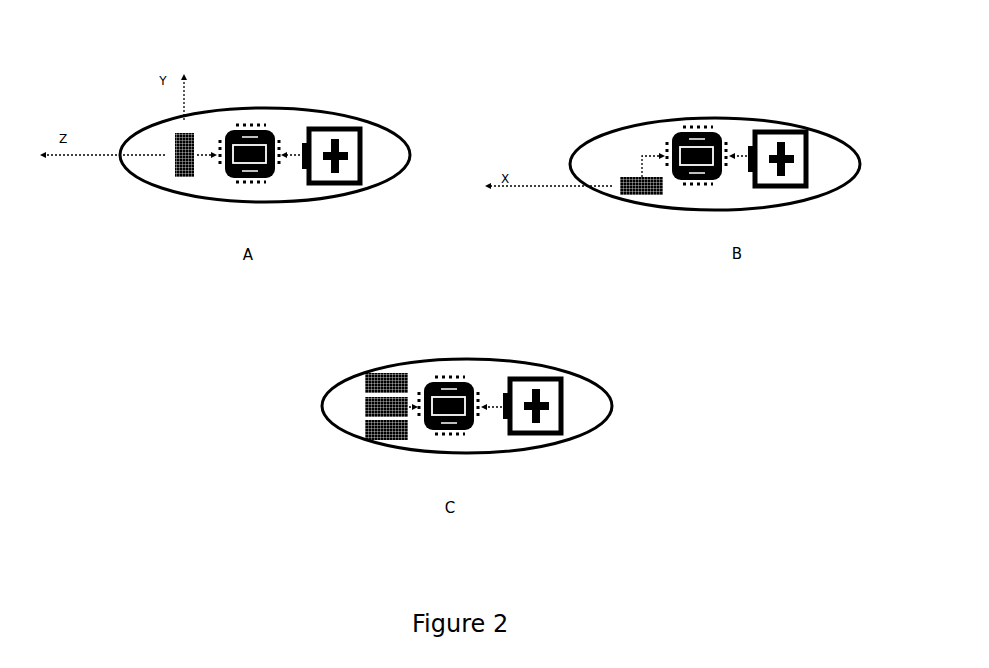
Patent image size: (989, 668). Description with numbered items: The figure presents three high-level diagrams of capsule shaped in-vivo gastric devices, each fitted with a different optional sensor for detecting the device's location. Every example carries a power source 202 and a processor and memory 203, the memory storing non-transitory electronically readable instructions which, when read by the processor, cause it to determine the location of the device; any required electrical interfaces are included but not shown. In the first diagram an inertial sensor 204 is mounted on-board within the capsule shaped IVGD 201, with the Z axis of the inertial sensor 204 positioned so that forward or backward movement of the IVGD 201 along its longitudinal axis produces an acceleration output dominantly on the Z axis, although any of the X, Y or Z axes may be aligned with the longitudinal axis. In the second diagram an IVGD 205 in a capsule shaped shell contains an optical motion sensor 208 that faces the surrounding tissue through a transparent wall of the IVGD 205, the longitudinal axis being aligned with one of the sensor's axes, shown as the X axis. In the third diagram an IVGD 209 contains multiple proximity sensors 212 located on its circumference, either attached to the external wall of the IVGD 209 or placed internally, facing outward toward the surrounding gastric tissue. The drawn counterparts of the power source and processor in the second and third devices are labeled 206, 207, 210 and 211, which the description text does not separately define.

In FIG. 2A, the capsule shaped IVGD 201 is at (404, 136).
In FIG. 2A, the power source 202 is at (364, 128).
In FIG. 2A, the processor and memory 203 is at (266, 127).
In FIG. 2A, the inertial sensor 204 is at (196, 135).
In FIG. 2B, the IVGD 205 is at (852, 143).
In FIG. 2B, the battery 206 is at (810, 136).
In FIG. 2B, the processor 207 is at (721, 136).
In FIG. 2B, the optical motion sensor 208 is at (633, 197).
In FIG. 2C, the IVGD 209 is at (606, 387).
In FIG. 2C, the battery 210 is at (568, 372).
In FIG. 2C, the processor 211 is at (468, 379).
In FIG. 2C, the proximity sensors 212 is at (423, 367).